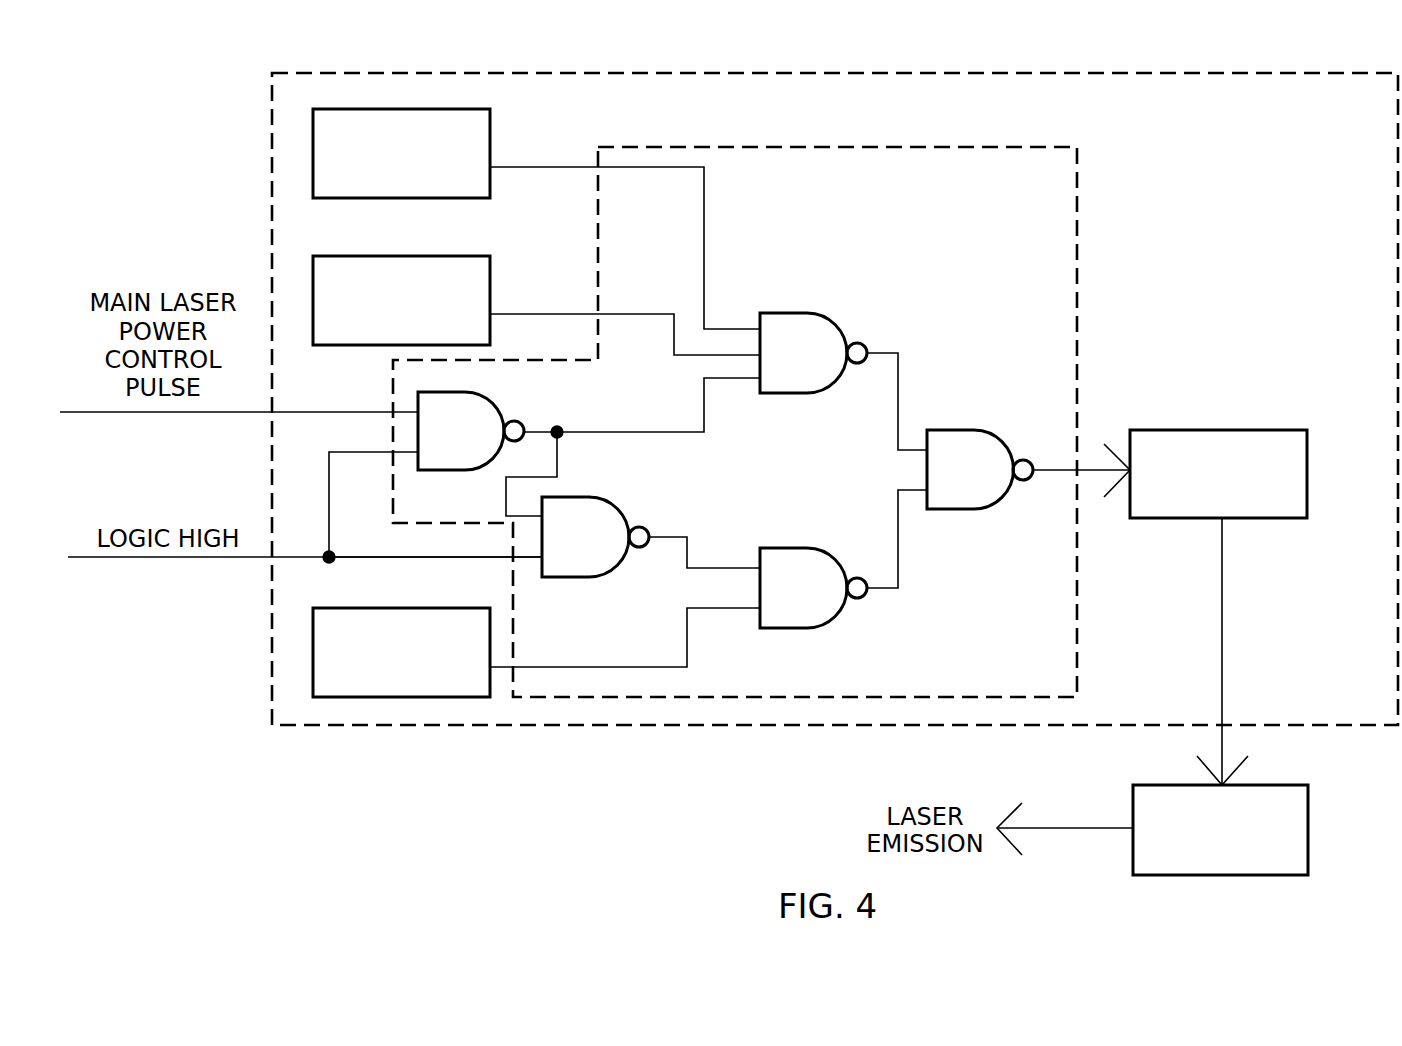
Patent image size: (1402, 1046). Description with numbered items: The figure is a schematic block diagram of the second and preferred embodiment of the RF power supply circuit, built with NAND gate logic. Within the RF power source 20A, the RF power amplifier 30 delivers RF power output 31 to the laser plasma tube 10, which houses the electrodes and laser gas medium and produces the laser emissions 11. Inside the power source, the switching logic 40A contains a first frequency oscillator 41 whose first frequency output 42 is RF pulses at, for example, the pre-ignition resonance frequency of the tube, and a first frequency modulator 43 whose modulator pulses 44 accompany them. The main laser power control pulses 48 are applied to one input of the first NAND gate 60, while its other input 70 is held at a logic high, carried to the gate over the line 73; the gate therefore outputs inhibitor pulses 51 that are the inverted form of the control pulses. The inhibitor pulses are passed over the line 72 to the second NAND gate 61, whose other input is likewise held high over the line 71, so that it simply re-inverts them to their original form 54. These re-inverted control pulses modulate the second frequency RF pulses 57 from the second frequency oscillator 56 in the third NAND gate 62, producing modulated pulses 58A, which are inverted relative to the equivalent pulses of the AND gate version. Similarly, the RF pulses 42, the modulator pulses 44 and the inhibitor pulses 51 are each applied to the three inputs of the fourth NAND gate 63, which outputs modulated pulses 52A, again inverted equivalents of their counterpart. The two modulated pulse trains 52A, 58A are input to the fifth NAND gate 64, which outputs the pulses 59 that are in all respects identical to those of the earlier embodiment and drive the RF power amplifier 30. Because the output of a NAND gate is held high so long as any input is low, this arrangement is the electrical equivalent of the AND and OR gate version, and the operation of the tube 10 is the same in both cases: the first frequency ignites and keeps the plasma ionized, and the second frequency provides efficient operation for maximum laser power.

The laser plasma tube 10 is at (1280, 785).
The laser emissions 11 is at (1048, 828).
The RF power source 20A is at (1128, 73).
The RF power amplifier 30 is at (1275, 430).
The RF power output 31 is at (1222, 572).
The switching logic 40A is at (1080, 278).
The first frequency oscillator 41 is at (398, 109).
The first frequency output 42 is at (537, 167).
The first frequency modulator 43 is at (440, 256).
The modulator pulses 44 is at (520, 314).
The main laser power control pulses 48 is at (83, 412).
The inhibitor pulses 51 is at (595, 432).
The modulated pulses 52A is at (898, 373).
The re-inverted main laser power control pulses 54 is at (680, 536).
The second frequency oscillator 56 is at (372, 608).
The second frequency RF pulses 57 is at (575, 667).
The modulated pulses 58A is at (898, 570).
The output pulses 59 is at (1047, 470).
The first NAND gate 60 is at (487, 392).
The second NAND gate 61 is at (588, 577).
The third NAND gate 62 is at (797, 548).
The fourth NAND gate 63 is at (808, 313).
The fifth NAND gate 64 is at (965, 430).
The logic high input 70 is at (86, 557).
The logic high line to second NAND gate 71 is at (410, 557).
The inhibitor pulse line to second NAND gate 72 is at (567, 477).
The logic high line to first NAND gate 73 is at (329, 480).